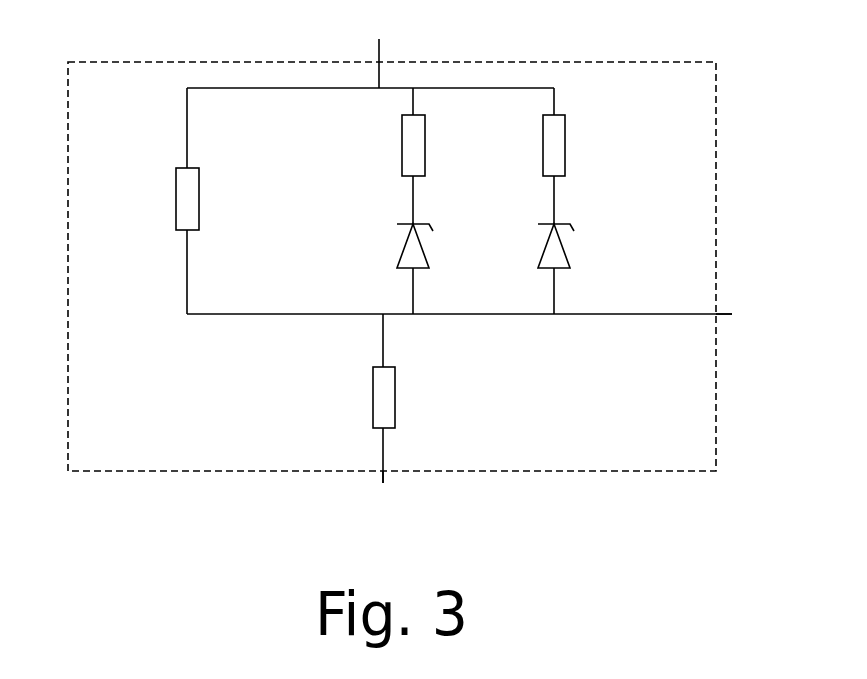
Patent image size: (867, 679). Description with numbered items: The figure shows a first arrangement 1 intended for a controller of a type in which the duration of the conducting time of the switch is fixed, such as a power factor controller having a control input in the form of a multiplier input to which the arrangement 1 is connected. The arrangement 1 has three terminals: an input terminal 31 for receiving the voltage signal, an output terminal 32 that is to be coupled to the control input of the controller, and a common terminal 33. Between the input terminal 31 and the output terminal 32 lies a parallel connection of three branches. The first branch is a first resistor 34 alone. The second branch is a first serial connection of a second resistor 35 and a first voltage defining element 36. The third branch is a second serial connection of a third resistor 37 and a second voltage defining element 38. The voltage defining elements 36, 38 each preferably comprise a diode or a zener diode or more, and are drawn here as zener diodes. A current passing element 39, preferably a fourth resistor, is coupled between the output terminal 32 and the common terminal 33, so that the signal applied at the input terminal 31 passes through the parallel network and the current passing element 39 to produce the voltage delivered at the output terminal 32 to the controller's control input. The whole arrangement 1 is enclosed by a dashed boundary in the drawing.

The first arrangement 1 is at (692, 471).
The input terminal 31 is at (380, 46).
The output terminal 32 is at (740, 315).
The common terminal 33 is at (385, 497).
The first resistor 34 is at (165, 199).
The second resistor 35 is at (390, 145).
The first voltage defining element 36 is at (392, 246).
The third resistor 37 is at (576, 145).
The second voltage defining element 38 is at (578, 246).
The current passing element 39 is at (362, 397).